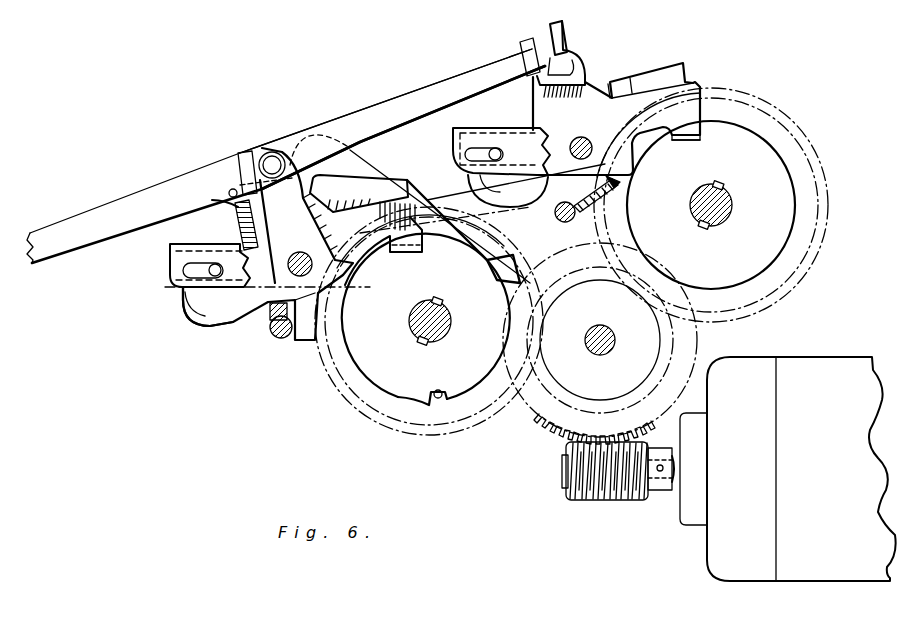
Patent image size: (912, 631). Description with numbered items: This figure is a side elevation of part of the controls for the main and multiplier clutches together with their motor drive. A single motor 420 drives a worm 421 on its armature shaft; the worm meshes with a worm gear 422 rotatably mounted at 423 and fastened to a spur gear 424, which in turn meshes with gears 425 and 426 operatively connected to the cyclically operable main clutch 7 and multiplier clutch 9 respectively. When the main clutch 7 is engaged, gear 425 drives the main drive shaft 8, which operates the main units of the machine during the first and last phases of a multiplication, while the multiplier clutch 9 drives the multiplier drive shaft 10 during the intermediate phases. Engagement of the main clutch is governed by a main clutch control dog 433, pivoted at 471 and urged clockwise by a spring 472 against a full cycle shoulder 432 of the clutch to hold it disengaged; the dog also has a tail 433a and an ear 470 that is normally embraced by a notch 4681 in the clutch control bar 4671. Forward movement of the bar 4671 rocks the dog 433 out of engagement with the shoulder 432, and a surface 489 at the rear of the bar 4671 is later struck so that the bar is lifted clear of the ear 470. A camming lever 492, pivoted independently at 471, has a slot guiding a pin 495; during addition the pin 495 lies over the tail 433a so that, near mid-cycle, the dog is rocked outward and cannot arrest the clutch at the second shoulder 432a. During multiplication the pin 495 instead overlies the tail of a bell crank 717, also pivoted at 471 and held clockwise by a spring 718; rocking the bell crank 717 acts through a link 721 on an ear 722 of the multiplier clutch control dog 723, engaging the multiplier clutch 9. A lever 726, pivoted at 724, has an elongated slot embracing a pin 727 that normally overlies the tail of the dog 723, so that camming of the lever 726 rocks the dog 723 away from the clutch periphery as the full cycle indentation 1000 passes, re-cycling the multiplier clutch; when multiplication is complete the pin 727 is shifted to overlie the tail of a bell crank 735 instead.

The clutch control bar 4671 is at (130, 195).
The link 721 is at (467, 89).
The ear 722 is at (580, 52).
The multiplier clutch control dog 723 is at (702, 93).
The full cycle indentation 1000 is at (692, 140).
The pivot 724 is at (600, 134).
The lever 726 is at (480, 128).
The pin 727 is at (498, 148).
The bell crank 735 is at (465, 188).
The multiplier clutch 9 is at (800, 215).
The gear 426 is at (797, 288).
The multiplier drive shaft 10 is at (734, 205).
The main clutch 7 is at (390, 403).
The gear 425 is at (458, 427).
The main drive shaft 8 is at (420, 337).
The second shoulder 432a is at (432, 398).
The full cycle shoulder 432 is at (408, 253).
The surface 489 is at (484, 277).
The main clutch control dog 433 is at (414, 184).
The ear 470 is at (238, 178).
The notch 4681 is at (295, 150).
The pivot 471 is at (302, 246).
The spring 472 is at (285, 342).
The spring 718 is at (315, 347).
The tail 433a is at (215, 305).
The bell crank 717 is at (198, 304).
The camming lever 492 is at (170, 262).
The pin 495 is at (208, 270).
The rotatable mounting 423 is at (610, 350).
The spur gear 424 is at (648, 374).
The worm gear 422 is at (563, 438).
The worm 421 is at (588, 493).
The motor 420 is at (817, 367).